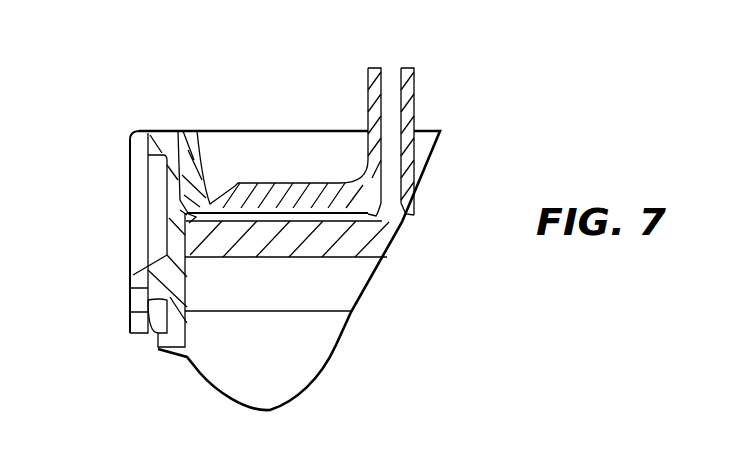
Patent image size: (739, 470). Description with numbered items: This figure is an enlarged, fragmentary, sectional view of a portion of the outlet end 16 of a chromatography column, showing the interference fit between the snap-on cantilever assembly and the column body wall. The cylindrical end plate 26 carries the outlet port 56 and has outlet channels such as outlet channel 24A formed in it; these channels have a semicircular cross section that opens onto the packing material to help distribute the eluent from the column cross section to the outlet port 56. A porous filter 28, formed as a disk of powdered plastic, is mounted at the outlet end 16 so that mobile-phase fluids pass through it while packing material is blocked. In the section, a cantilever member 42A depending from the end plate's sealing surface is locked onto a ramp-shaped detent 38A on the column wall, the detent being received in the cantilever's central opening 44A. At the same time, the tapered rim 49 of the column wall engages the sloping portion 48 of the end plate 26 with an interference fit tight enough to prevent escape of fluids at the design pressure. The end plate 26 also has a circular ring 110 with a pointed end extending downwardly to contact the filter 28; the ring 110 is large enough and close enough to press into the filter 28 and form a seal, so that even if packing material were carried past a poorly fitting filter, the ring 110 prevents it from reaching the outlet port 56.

The outlet end 16 is at (235, 62).
The outlet channel 24A is at (295, 180).
The cylindrical end plate 26 is at (262, 160).
The filter 28 is at (283, 262).
The detent 38A is at (148, 288).
The cantilever member 42A is at (130, 320).
The central opening 44A is at (138, 210).
The sloping portion 48 is at (207, 178).
The tapered rim 49 is at (199, 131).
The outlet port 56 is at (414, 80).
The circular ring 110 is at (188, 215).